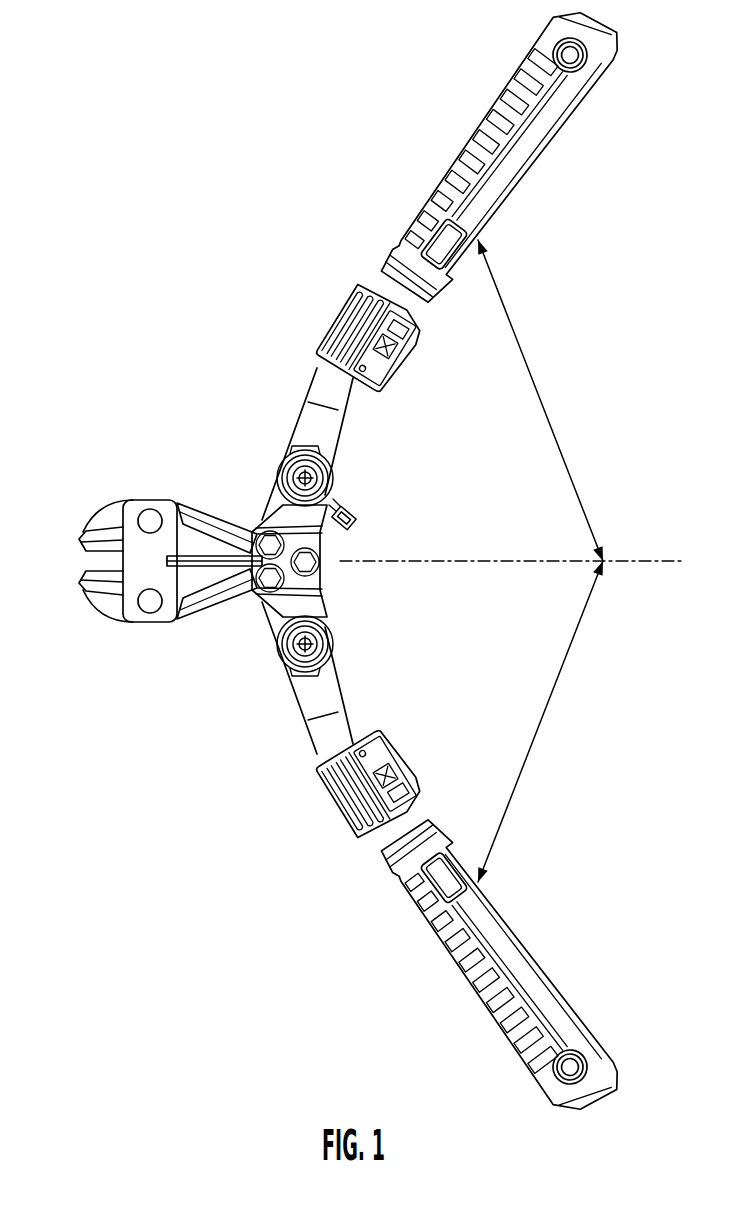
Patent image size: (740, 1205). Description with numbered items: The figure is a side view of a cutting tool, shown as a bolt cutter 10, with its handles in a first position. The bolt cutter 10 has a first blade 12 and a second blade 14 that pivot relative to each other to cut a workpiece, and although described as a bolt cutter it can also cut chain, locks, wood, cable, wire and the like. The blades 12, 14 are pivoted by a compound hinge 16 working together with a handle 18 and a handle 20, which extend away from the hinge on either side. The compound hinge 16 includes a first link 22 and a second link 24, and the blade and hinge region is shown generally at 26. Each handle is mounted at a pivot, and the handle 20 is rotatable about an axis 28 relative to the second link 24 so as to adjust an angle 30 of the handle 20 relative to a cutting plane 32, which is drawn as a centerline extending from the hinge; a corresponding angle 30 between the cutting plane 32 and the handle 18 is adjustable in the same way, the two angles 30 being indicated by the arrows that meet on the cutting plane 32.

The bolt cutter 10 is at (181, 166).
The first blade 12 is at (83, 541).
The second blade 14 is at (83, 585).
The compound hinge 16 is at (261, 438).
The handle 18 is at (507, 174).
The handle 20 is at (514, 961).
The first link 22 is at (262, 508).
The second link 24 is at (267, 609).
The jaw assembly 26 is at (95, 374).
The axis 28 is at (312, 476).
The angle 30 is at (522, 352).
The cutting plane 32 is at (652, 561).